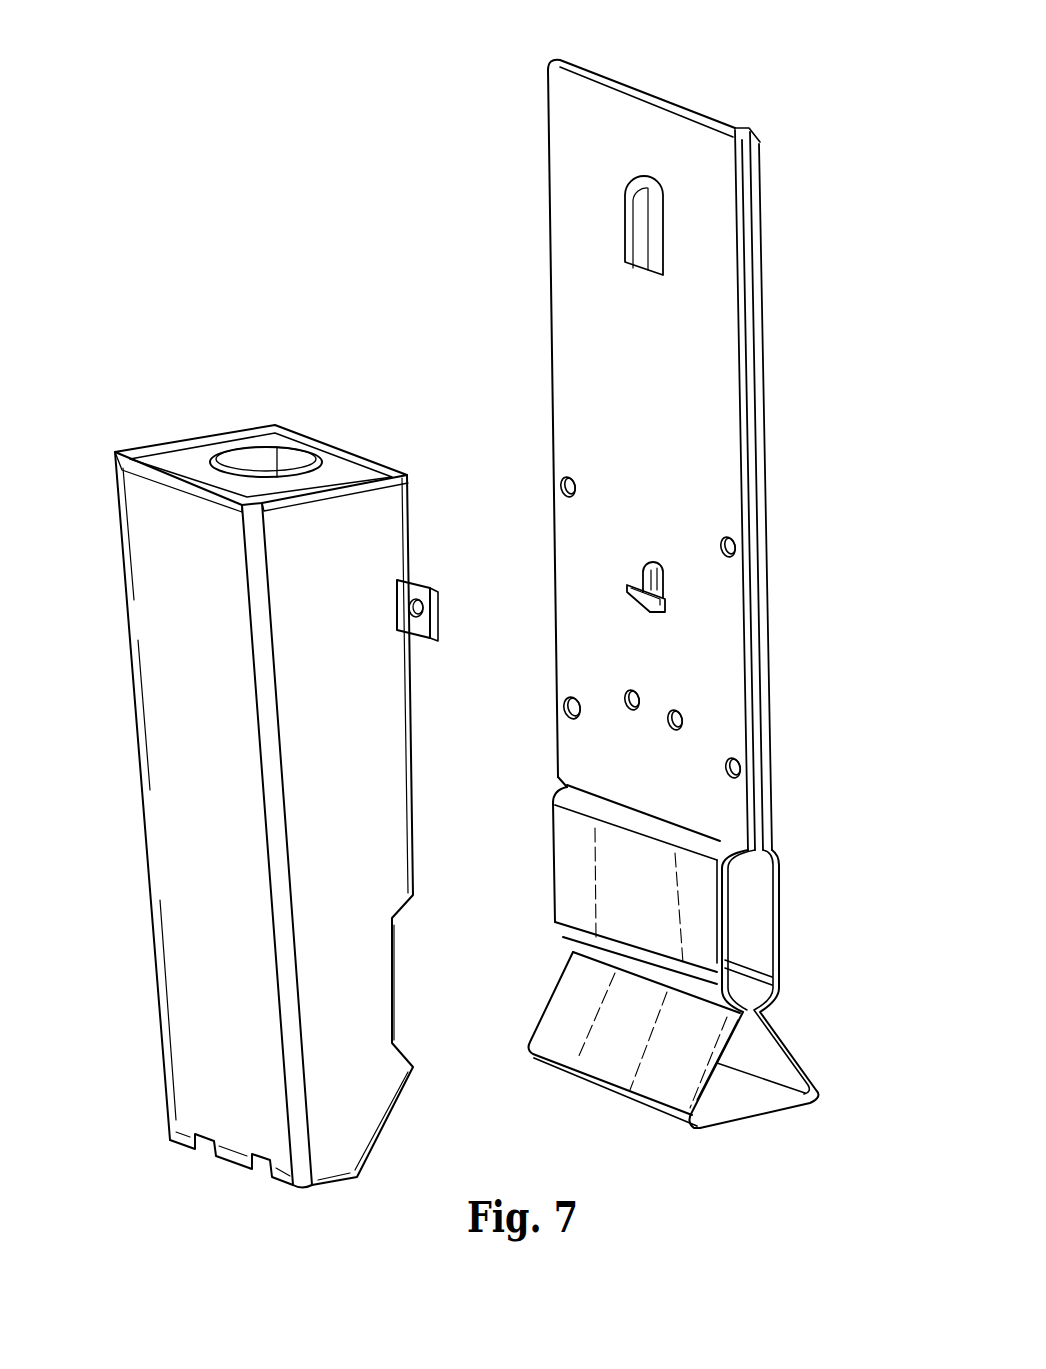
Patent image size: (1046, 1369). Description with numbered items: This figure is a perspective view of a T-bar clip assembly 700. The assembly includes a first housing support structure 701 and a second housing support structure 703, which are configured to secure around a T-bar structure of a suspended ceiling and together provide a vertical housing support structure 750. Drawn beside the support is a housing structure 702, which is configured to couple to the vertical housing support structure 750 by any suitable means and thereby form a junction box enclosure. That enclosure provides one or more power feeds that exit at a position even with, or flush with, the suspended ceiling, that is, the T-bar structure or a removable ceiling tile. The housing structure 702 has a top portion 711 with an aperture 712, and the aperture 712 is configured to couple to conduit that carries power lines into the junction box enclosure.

The T-bar clip assembly 700 is at (262, 160).
The first housing support structure 701 is at (573, 120).
The housing structure 702 is at (157, 547).
The second housing support structure 703 is at (770, 647).
The top portion 711 is at (191, 452).
The aperture 712 is at (263, 458).
The vertical housing support structure 750 is at (857, 143).